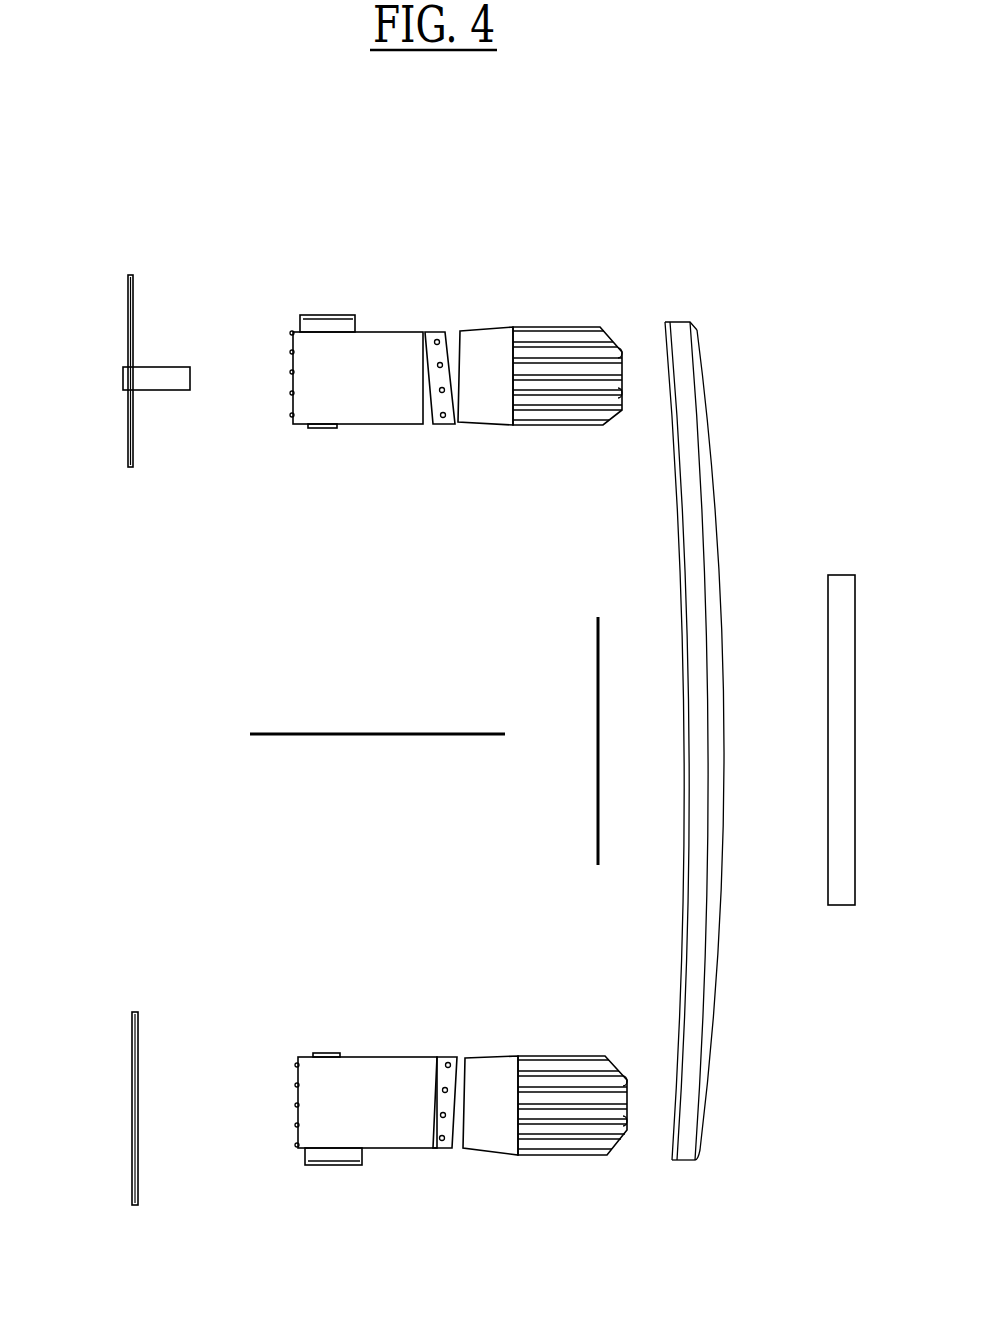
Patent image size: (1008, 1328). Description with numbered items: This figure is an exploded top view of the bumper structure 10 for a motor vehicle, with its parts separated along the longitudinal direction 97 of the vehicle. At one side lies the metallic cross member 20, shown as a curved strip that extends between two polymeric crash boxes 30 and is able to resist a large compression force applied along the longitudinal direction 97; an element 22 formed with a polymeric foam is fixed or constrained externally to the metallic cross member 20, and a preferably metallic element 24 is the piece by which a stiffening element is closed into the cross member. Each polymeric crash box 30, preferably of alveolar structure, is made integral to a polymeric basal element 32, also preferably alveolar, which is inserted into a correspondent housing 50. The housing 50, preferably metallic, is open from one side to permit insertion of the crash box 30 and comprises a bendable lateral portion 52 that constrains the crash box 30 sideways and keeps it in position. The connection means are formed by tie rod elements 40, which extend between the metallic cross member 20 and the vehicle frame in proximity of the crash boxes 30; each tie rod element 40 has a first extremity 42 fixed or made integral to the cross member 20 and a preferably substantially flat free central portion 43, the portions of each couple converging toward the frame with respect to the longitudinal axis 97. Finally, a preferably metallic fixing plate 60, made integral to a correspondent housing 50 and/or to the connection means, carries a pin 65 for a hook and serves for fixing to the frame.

The bumper structure 10 is at (780, 218).
The metallic cross member 20 is at (712, 470).
The element formed with a polymeric foam 22 is at (838, 840).
The element 24 is at (598, 808).
The polymeric crash box 30 is at (595, 395).
The polymeric basal element 32 is at (492, 410).
The tie rod element 40 is at (385, 352).
The first extremity 42 is at (443, 425).
The free central portion 43 is at (362, 352).
The housing 50 is at (322, 323).
The bendable lateral portion 52 is at (322, 427).
The fixing plate 60 is at (128, 290).
The pin for a hook 65 is at (165, 375).
The longitudinal direction 97 is at (312, 737).